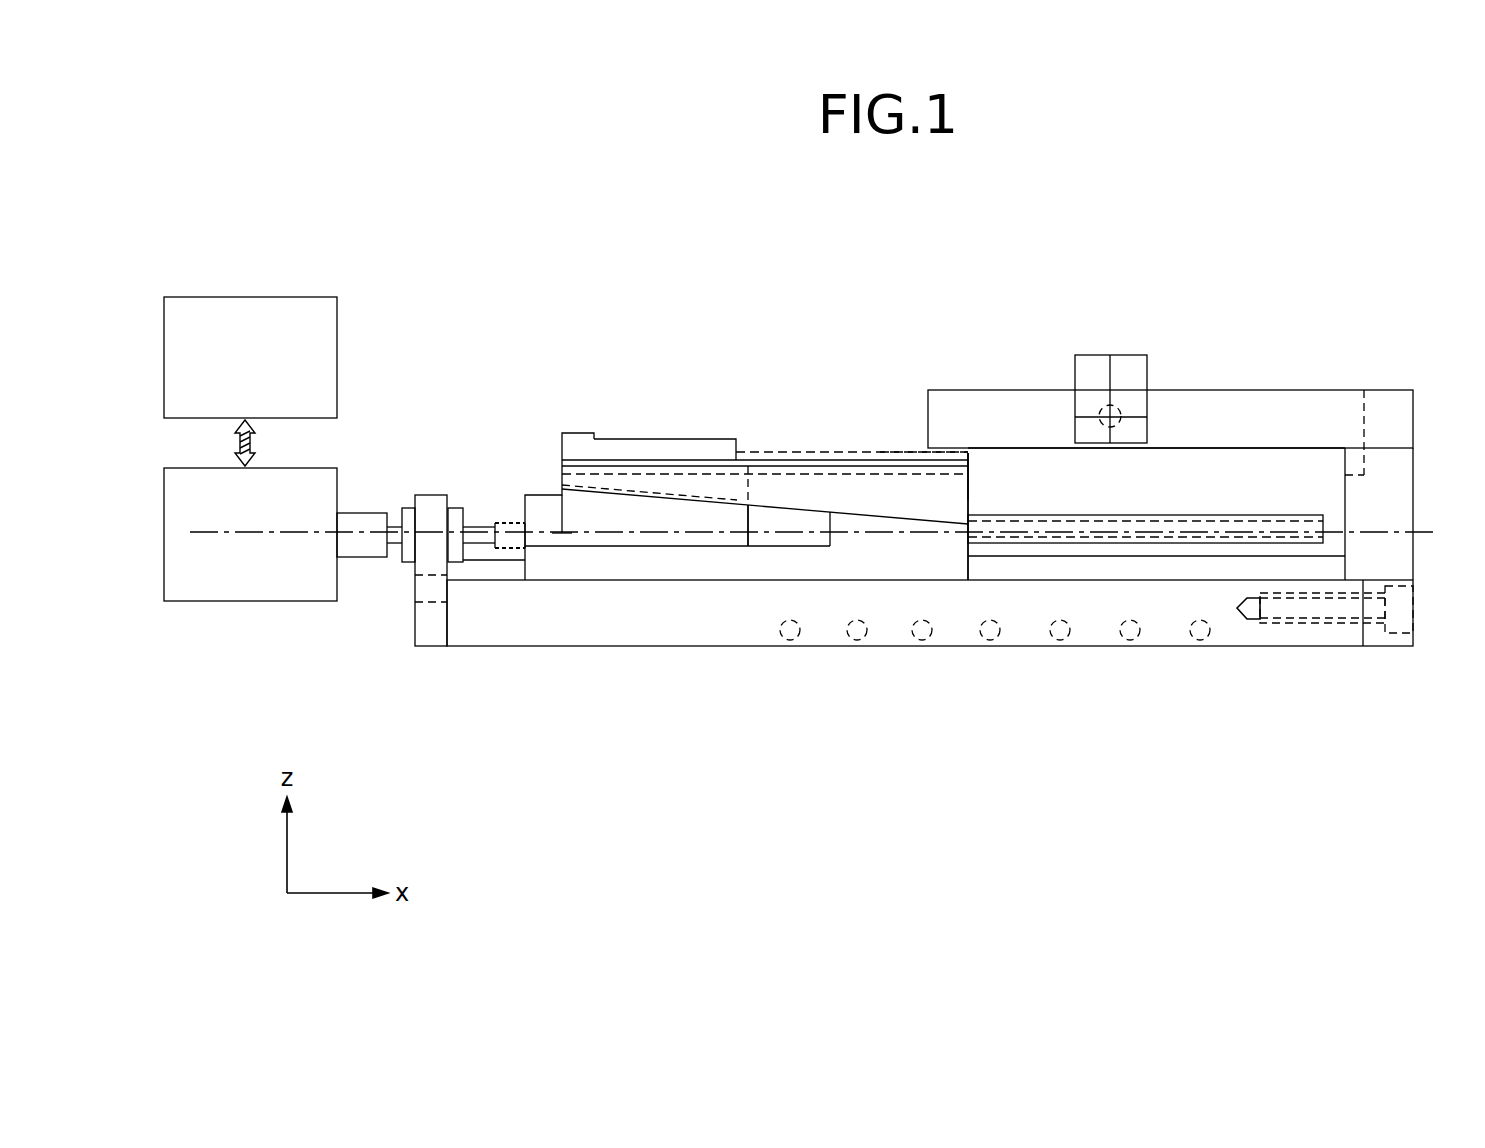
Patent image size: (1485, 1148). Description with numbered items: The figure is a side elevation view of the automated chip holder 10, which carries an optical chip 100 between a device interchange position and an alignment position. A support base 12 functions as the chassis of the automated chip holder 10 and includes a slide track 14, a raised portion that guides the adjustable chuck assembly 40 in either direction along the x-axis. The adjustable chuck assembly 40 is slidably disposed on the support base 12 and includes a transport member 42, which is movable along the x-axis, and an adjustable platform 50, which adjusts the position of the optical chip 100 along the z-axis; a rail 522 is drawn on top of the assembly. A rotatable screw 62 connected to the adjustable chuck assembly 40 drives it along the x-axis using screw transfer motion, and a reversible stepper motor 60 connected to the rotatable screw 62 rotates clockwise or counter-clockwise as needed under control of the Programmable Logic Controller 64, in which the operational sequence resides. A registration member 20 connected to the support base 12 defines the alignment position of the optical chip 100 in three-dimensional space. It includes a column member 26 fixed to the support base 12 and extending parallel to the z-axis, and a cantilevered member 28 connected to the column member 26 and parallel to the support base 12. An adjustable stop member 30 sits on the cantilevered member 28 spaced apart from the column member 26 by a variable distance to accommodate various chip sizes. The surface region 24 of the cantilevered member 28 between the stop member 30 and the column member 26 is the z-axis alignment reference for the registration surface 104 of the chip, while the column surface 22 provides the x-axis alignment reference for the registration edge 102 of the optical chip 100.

The automated chip holder 10 is at (1228, 203).
The support base 12 is at (748, 628).
The slide track 14 is at (1115, 563).
The registration member 20 is at (1413, 395).
The column surface 22 is at (1342, 462).
The surface region 24 is at (1263, 448).
The column member 26 is at (1397, 507).
The cantilevered member 28 is at (1196, 405).
The adjustable stop member 30 is at (1090, 367).
The adjustable chuck assembly 40 is at (812, 345).
The transport member 42 is at (840, 548).
The adjustable platform 50 is at (852, 495).
The stepper motor 60 is at (228, 596).
The rotatable screw 62 is at (508, 518).
The Programmable Logic Controller (PLC) 64 is at (300, 318).
The optical chip 100 is at (888, 450).
The registration edge 102 is at (972, 455).
The registration surface 104 is at (908, 450).
The guide rail 522 is at (673, 450).